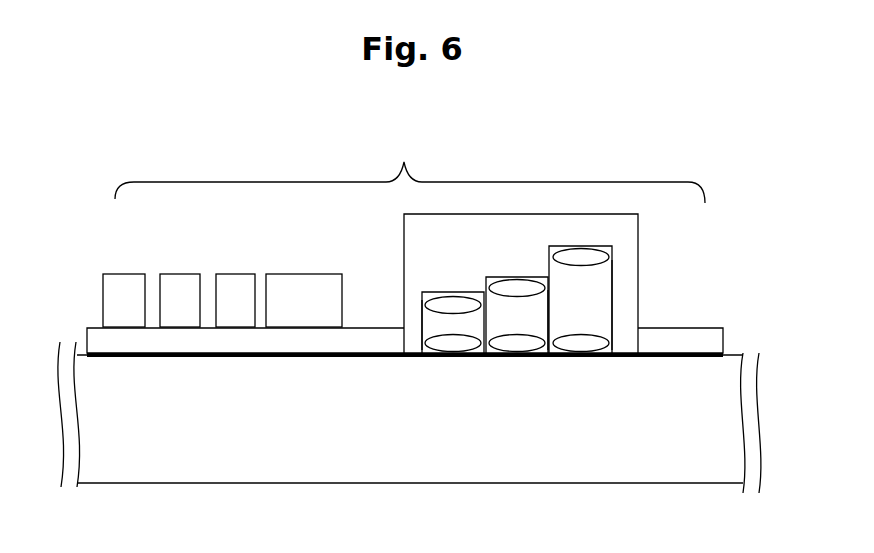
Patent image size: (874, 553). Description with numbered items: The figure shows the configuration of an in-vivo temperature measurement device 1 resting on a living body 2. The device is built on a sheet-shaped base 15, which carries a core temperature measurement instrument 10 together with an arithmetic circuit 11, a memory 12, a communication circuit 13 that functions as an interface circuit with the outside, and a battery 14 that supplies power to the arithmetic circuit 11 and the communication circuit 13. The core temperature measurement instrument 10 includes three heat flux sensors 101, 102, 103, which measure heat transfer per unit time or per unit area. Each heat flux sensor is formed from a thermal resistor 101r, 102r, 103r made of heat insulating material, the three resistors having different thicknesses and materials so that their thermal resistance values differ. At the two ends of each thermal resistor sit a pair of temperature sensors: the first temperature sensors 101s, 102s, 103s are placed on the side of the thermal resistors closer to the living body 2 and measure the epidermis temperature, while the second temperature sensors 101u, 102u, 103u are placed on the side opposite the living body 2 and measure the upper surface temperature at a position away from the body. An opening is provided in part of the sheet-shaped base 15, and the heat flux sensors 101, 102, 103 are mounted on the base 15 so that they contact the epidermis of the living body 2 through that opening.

The in-vivo temperature measurement device 1 is at (410, 168).
The living body 2 is at (638, 475).
The core temperature measurement instrument 10 is at (580, 213).
The arithmetic circuit 11 is at (283, 272).
The memory 12 is at (222, 272).
The communication circuit 13 is at (166, 272).
The battery 14 is at (110, 272).
The sheet-shaped base 15 is at (713, 336).
The heat flux sensor 101 is at (443, 290).
The heat flux sensor 102 is at (503, 277).
The heat flux sensor 103 is at (570, 244).
The second temperature sensor 101u is at (450, 304).
The thermal resistor 101r is at (448, 322).
The first temperature sensor 101s is at (452, 345).
The second temperature sensor 102u is at (548, 278).
The thermal resistor 102r is at (538, 332).
The first temperature sensor 102s is at (508, 357).
The second temperature sensor 103u is at (612, 247).
The thermal resistor 103r is at (593, 300).
The first temperature sensor 103s is at (578, 346).